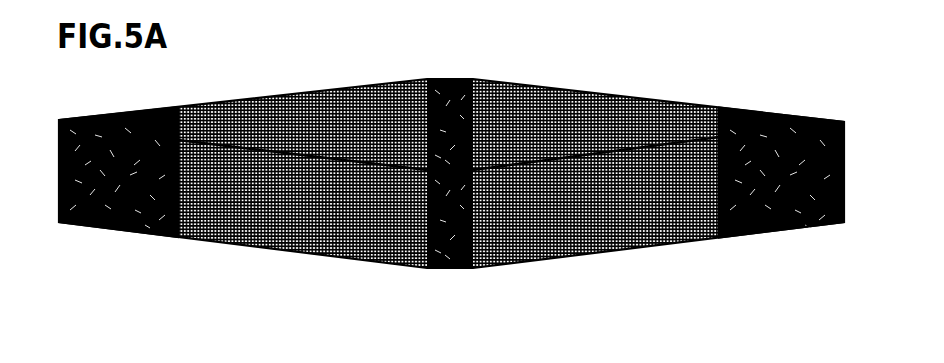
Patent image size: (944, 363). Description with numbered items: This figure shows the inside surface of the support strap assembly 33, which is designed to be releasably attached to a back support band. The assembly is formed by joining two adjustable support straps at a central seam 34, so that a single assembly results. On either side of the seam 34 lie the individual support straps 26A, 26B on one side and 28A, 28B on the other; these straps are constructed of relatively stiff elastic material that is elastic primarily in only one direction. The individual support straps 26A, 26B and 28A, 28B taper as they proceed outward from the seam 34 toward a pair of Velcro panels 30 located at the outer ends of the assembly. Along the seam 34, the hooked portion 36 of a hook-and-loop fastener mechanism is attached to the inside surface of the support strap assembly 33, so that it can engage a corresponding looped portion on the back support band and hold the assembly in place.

The support strap assembly 33 is at (444, 181).
The Velcro panels 30 is at (73, 119).
The individual support strap 28A is at (290, 92).
The individual support strap 28B is at (315, 253).
The individual support strap 26A is at (622, 95).
The individual support strap 26B is at (607, 255).
The hooked portion 36 is at (452, 77).
The seam 34 is at (432, 269).